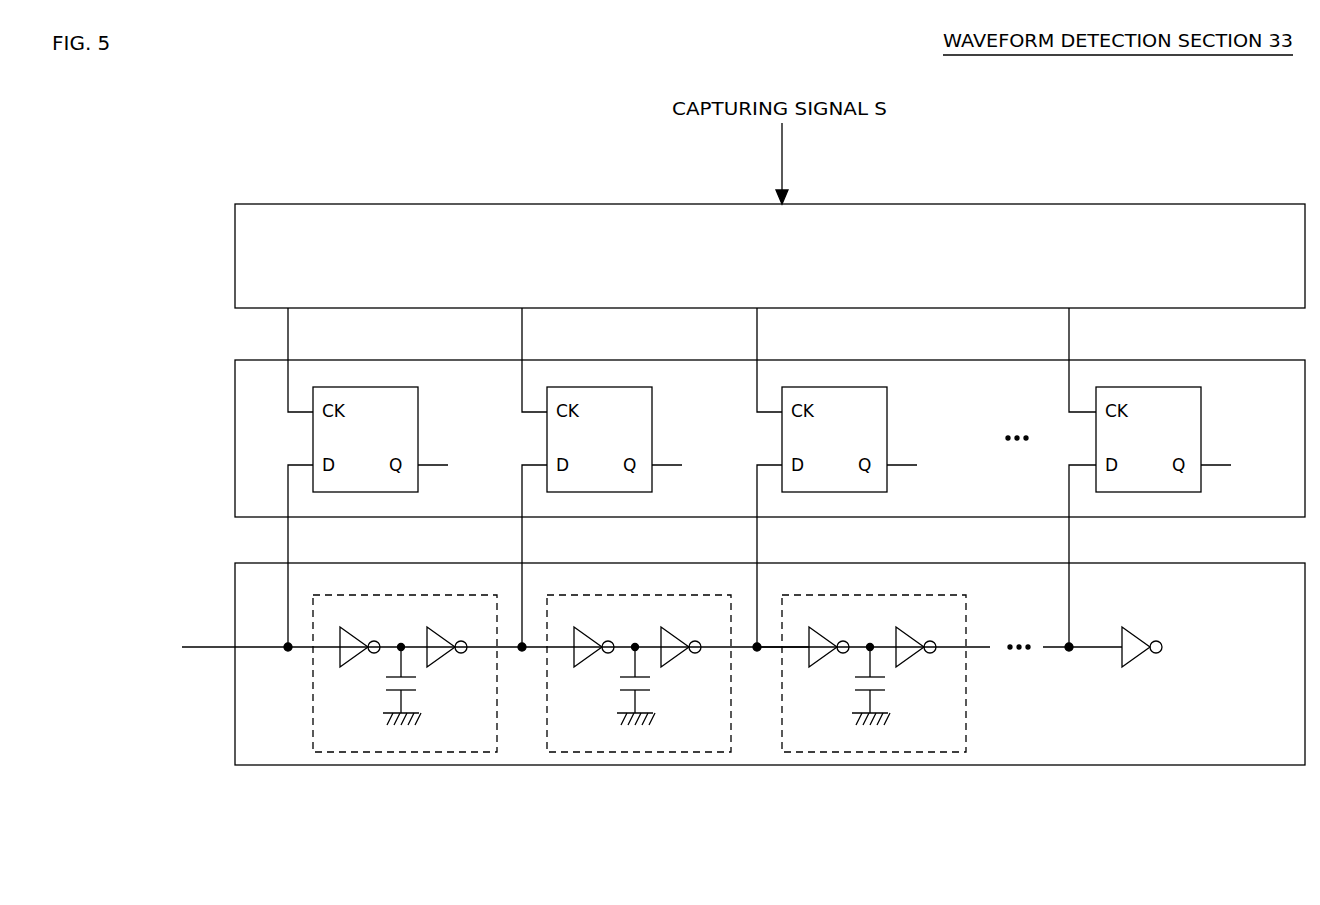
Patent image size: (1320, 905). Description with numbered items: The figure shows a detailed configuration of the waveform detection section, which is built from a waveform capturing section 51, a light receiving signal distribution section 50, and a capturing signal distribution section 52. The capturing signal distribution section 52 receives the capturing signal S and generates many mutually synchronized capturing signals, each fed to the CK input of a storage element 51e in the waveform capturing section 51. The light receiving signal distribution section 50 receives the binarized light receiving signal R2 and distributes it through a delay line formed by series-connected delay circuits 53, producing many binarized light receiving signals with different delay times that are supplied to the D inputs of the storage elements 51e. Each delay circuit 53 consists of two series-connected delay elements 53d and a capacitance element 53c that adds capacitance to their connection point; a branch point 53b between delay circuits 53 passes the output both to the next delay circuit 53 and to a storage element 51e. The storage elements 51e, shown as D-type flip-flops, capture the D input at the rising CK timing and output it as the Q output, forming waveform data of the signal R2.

The capturing signal distribution section 52 is at (1225, 204).
The waveform capturing section 51 is at (770, 477).
The storage element 51e is at (887, 390).
The light receiving signal distribution section 50 is at (675, 675).
The delay circuit 53 is at (889, 691).
The branch point 53b is at (765, 655).
The delay element 53d is at (832, 662).
The capacitance element 53c is at (893, 678).